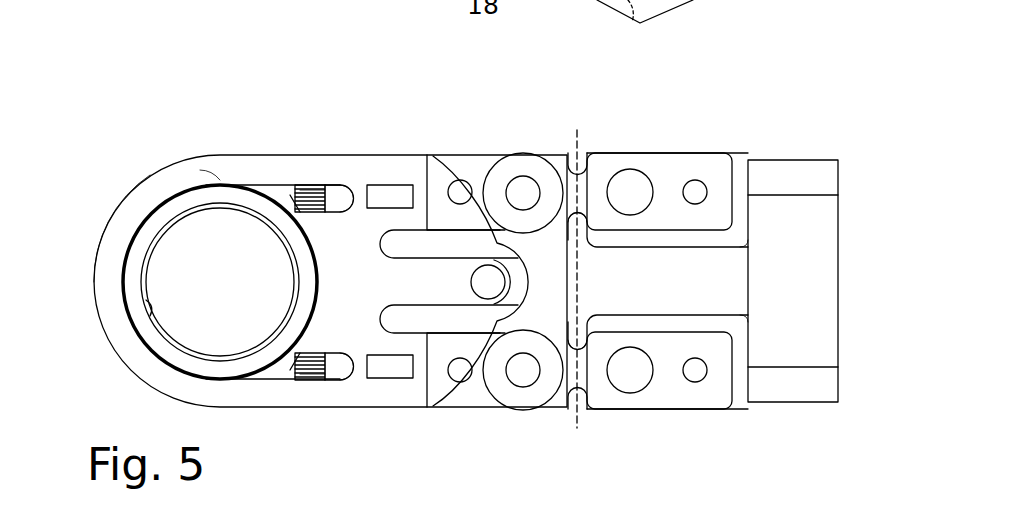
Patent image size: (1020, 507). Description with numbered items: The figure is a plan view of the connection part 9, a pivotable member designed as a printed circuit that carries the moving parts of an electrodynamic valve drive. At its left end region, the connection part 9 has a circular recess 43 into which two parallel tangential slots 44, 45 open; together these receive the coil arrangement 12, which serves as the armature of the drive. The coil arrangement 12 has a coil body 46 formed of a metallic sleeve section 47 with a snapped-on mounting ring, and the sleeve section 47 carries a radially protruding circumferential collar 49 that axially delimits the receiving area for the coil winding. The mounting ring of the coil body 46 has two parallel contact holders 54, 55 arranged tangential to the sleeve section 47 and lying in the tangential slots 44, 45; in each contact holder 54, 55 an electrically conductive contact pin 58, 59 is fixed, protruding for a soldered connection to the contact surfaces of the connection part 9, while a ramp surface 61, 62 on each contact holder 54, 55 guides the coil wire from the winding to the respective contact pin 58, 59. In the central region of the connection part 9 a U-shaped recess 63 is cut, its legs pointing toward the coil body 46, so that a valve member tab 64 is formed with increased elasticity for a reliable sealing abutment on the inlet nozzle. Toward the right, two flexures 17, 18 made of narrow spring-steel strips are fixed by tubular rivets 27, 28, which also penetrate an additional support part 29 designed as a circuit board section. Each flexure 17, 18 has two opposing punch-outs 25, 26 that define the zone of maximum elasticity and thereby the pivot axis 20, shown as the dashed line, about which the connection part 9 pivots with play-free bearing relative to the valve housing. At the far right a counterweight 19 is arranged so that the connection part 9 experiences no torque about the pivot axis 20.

The connection part 9 is at (291, 77).
The coil arrangement 12 is at (174, 193).
The coil body 46 is at (240, 282).
The sleeve section 47 is at (150, 310).
The circumferential collar 49 is at (130, 256).
The circular recess 43 is at (214, 180).
The ramp surface 61 is at (262, 193).
The contact holder 54 is at (291, 178).
The tangential slot 44 is at (332, 180).
The contact pin 58 is at (346, 190).
The U-shaped recess 63 is at (400, 237).
The support part 29 is at (462, 165).
The tubular rivet 27 is at (521, 165).
The tubular rivet 28 is at (526, 400).
The valve member tab 64 is at (487, 290).
The pivot axis 20 is at (581, 152).
The punch-out 25 is at (600, 210).
The punch-out 26 is at (598, 345).
The flexure 17 is at (712, 165).
The flexure 18 is at (707, 400).
The counterweight 19 is at (793, 170).
The contact holder 55 is at (268, 396).
The ramp surface 62 is at (309, 372).
The tangential slot 45 is at (330, 385).
The contact pin 59 is at (345, 382).